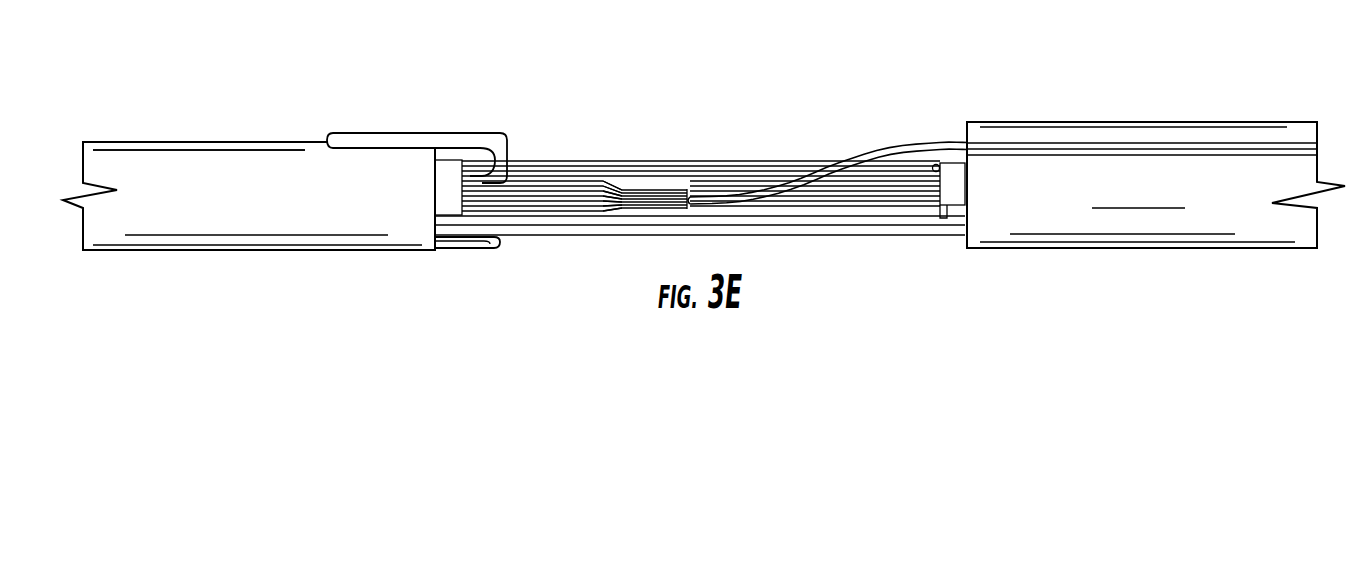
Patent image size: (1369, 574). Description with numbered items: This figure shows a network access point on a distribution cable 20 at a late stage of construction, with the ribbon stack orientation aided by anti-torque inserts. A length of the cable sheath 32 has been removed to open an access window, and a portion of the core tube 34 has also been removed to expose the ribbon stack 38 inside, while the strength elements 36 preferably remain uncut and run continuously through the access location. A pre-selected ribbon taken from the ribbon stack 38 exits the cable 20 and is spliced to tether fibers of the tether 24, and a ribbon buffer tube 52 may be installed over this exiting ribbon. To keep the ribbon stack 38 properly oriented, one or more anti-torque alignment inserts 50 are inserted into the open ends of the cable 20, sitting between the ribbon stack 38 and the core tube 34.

The distribution cable 20 is at (146, 142).
The tether 24 is at (1053, 125).
The cable sheath 32 is at (218, 165).
The core tube 34 is at (448, 180).
The strength elements 36 is at (552, 167).
The ribbon stack 38 is at (653, 129).
The anti-torque alignment inserts 50 is at (402, 140).
The ribbon buffer tube 52 is at (877, 153).